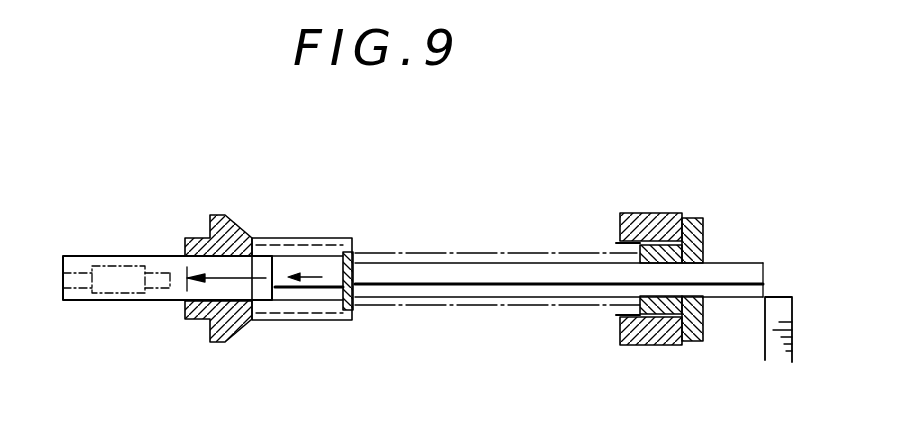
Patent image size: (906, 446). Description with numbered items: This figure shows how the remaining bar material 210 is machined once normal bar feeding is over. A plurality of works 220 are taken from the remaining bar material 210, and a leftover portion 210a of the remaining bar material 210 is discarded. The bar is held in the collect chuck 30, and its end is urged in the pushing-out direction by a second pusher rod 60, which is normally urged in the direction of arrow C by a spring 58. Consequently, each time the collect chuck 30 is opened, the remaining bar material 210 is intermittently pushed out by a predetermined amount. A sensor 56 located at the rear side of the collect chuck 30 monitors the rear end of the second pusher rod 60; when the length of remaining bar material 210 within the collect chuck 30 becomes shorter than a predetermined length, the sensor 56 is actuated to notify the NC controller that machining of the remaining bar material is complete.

The remaining bar material 210 is at (142, 303).
The portion of the remaining bar material 210a is at (177, 302).
The work 220 is at (123, 267).
The collect chuck 30 is at (218, 215).
The second pusher rod 60 is at (332, 272).
The arrow C is at (305, 281).
The spring 58 is at (462, 252).
The sensor 56 is at (768, 350).